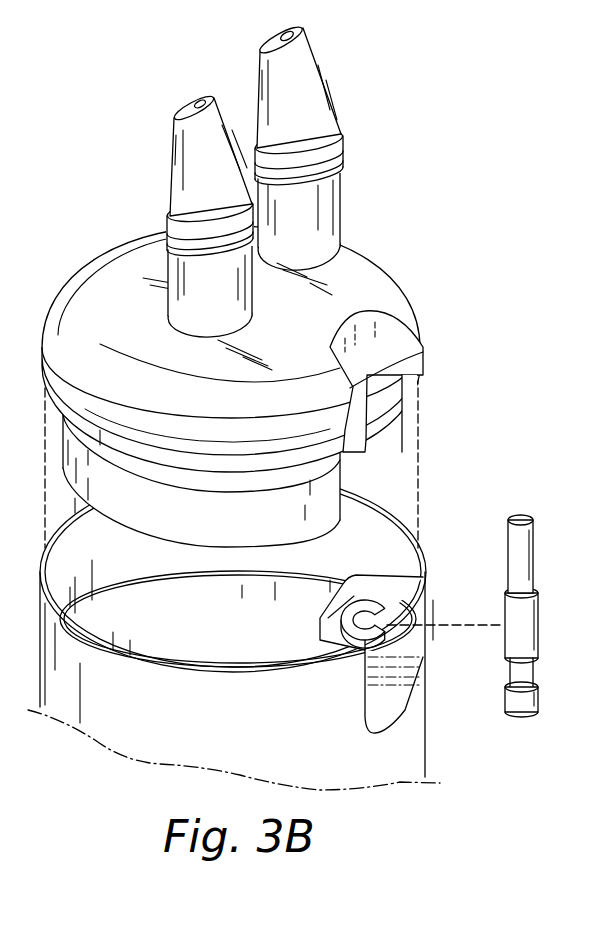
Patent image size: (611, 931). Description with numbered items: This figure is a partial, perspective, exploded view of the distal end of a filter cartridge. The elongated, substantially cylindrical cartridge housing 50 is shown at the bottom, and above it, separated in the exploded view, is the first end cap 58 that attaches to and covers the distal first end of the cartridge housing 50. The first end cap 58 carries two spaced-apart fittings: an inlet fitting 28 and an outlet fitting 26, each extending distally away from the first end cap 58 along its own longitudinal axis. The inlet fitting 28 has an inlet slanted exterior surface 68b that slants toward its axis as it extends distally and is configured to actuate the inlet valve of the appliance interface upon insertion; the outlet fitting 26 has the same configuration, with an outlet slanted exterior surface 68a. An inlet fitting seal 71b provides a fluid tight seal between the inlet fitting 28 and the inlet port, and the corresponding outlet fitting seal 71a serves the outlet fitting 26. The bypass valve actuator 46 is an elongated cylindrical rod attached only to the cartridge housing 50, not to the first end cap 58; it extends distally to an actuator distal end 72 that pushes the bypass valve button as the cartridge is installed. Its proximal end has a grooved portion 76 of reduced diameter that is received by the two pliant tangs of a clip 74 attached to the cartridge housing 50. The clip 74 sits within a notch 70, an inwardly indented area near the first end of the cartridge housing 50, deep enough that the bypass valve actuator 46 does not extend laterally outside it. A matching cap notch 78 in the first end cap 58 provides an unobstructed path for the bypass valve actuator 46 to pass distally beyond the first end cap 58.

The outlet fitting 26 is at (330, 200).
The inlet fitting 28 is at (177, 272).
The bypass valve actuator 46 is at (535, 627).
The cartridge housing 50 is at (430, 759).
The first end cap 58 is at (372, 280).
The outlet slanted exterior surface 68a is at (318, 77).
The inlet slanted exterior surface 68b is at (190, 168).
The notch 70 is at (392, 697).
The outlet fitting seal 71a is at (340, 152).
The inlet fitting seal 71b is at (168, 223).
The actuator distal end 72 is at (522, 515).
The clip 74 is at (384, 620).
The grooved portion 76 is at (532, 672).
The cap notch 78 is at (423, 352).